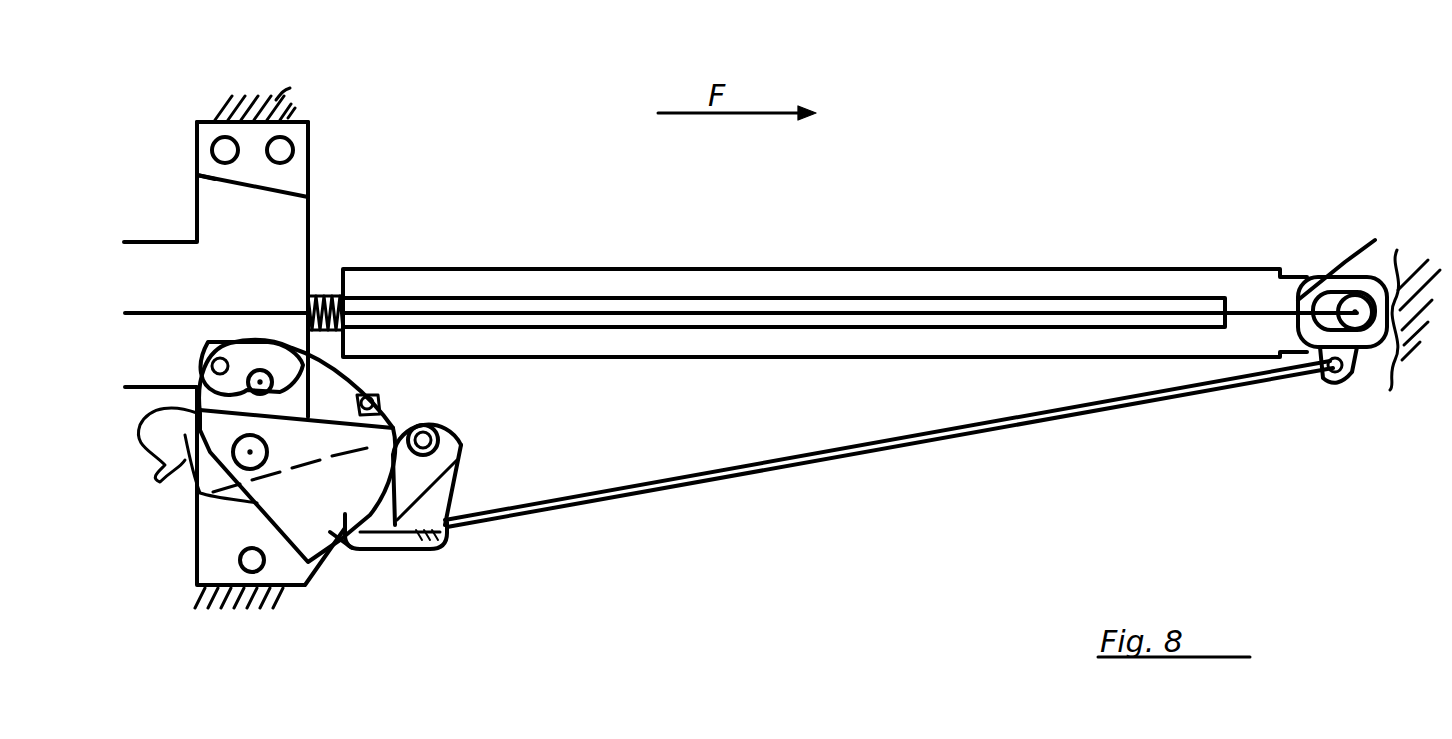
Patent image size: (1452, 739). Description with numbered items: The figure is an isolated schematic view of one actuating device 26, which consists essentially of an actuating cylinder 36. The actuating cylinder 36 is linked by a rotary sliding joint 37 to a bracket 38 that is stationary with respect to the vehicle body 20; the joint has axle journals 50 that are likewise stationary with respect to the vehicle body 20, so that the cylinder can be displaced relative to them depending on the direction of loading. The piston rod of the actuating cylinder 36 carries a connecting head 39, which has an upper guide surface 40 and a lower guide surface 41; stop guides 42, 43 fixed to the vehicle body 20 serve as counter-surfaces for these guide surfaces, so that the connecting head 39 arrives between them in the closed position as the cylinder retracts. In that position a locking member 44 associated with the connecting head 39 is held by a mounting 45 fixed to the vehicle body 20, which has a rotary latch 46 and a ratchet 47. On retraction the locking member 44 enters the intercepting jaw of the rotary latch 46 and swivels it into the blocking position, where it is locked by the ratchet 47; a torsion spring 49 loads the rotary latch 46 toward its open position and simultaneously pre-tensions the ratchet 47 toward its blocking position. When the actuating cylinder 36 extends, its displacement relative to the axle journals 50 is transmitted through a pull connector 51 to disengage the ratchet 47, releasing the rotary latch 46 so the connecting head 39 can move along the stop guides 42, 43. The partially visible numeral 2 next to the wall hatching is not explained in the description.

The frame wall 2 is at (1410, 300).
The vehicle body 20 is at (275, 104).
The actuating device 26 is at (1000, 220).
The actuating cylinder 36 is at (1098, 272).
The rotary sliding joint 37 is at (1334, 266).
The bracket 38 is at (1350, 385).
The connecting head 39 is at (242, 278).
The upper guide surface 40 is at (298, 196).
The lower guide surface 41 is at (352, 400).
The stop guide 42 is at (203, 183).
The stop guide 43 is at (197, 370).
The locking member 44 is at (263, 375).
The mounting 45 is at (352, 558).
The rotary latch 46 is at (200, 520).
The ratchet 47 is at (413, 550).
The torsion spring 49 is at (418, 400).
The axle journals 50 is at (1357, 312).
The pull connector 51 is at (897, 450).